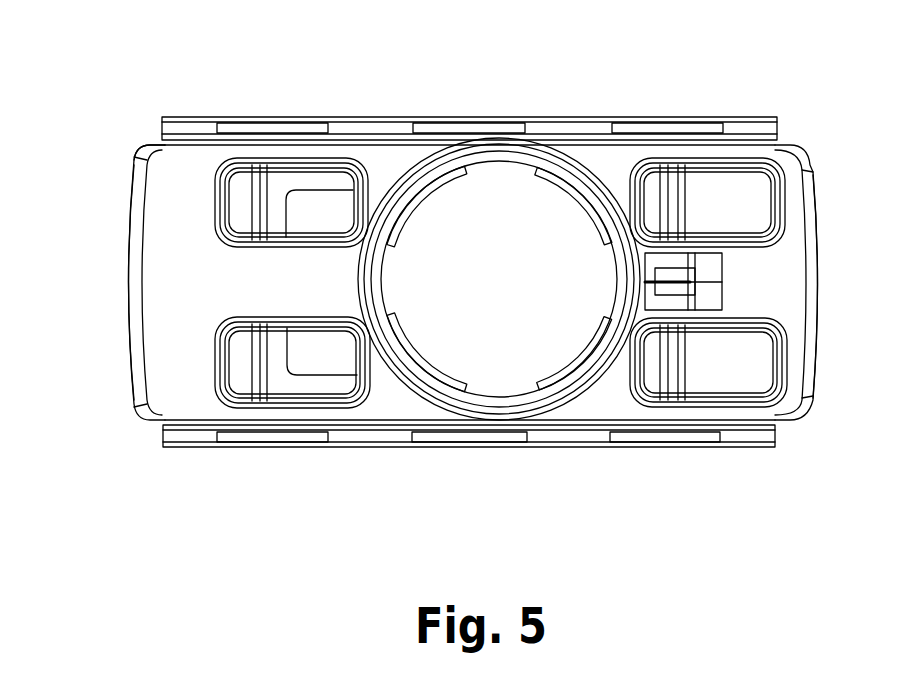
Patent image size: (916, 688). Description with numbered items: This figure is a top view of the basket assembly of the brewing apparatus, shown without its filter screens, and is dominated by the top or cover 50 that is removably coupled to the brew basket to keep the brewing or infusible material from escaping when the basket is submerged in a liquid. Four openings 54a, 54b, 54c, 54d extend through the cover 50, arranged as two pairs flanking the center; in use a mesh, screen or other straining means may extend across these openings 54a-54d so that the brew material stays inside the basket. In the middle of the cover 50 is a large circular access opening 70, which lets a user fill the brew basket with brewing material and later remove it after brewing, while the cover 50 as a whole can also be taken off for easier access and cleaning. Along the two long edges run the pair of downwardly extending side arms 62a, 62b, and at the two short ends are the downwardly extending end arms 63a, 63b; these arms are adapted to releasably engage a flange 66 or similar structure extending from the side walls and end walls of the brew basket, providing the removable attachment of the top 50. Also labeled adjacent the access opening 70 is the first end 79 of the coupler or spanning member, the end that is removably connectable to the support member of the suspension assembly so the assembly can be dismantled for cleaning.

The cover 50 is at (598, 410).
The opening 54a is at (283, 185).
The opening 54b is at (283, 380).
The opening 54c is at (742, 175).
The opening 54d is at (700, 377).
The side arm 62a is at (403, 117).
The side arm 62b is at (402, 448).
The end arm 63a is at (122, 260).
The end arm 63b is at (823, 260).
The flange 66 is at (140, 150).
The access opening 70 is at (508, 220).
The first end 79 is at (500, 417).